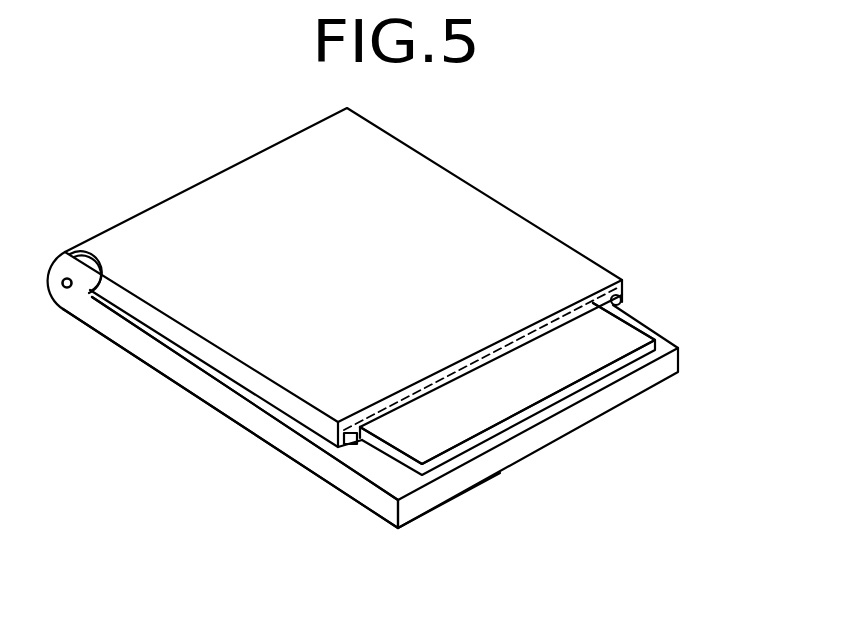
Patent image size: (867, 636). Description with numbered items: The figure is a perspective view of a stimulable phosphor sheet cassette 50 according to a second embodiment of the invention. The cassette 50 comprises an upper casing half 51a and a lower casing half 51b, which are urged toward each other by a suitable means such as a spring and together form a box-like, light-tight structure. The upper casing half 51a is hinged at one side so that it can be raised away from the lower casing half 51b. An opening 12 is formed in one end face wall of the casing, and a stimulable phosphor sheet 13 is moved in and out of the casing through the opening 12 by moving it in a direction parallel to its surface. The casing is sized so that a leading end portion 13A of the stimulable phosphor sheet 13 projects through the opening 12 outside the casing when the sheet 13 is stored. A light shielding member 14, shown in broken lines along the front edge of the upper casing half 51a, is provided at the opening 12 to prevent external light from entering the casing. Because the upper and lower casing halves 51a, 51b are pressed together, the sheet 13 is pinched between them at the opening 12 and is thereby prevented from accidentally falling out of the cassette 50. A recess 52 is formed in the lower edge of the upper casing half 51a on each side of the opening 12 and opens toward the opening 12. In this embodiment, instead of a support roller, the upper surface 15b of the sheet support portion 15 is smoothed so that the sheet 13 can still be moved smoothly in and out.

The cassette 50 is at (563, 143).
The upper casing half 51a is at (193, 200).
The lower casing half 51b is at (181, 377).
The recess 52 is at (355, 447).
The opening 12 is at (473, 369).
The stimulable phosphor sheet 13 is at (388, 466).
The leading end portion 13A is at (472, 425).
The light shielding member 14 is at (430, 384).
The sheet support portion 15 is at (598, 413).
The upper surface 15b is at (407, 483).